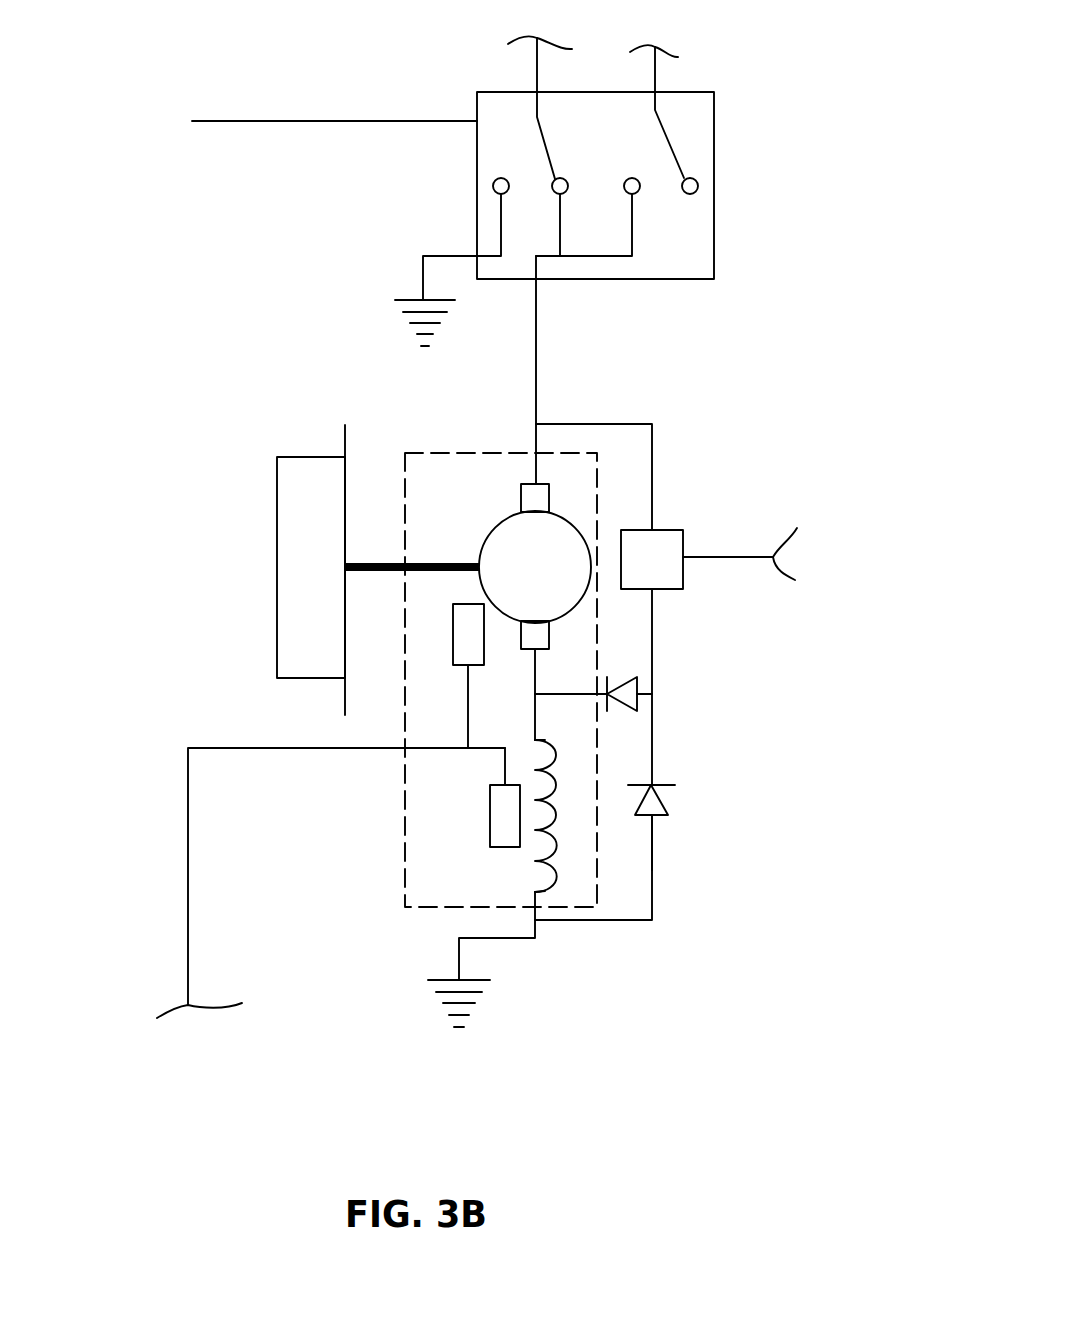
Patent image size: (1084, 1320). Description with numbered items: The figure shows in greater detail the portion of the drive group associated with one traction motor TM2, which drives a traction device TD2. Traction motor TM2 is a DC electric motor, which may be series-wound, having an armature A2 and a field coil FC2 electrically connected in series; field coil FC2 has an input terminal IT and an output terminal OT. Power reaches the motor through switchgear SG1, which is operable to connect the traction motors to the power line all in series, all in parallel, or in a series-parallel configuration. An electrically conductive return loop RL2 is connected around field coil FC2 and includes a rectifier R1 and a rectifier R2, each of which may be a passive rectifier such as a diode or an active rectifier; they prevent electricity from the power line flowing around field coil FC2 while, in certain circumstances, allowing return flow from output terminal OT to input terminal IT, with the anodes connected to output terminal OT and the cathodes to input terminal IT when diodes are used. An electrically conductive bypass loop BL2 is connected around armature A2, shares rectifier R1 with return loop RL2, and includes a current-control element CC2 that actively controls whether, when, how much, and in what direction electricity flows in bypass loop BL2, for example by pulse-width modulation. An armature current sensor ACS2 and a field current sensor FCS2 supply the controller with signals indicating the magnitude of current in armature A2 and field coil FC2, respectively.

The switchgear SG1 is at (477, 92).
The traction device TD2 is at (313, 455).
The traction motor TM2 is at (404, 873).
The armature A2 is at (559, 510).
The bypass loop BL2 is at (652, 477).
The current-control element CC2 is at (683, 557).
The rectifier R1 is at (637, 693).
The rectifier R2 is at (668, 782).
The return loop RL2 is at (652, 842).
The field coil FC2 is at (541, 823).
The input terminal IT is at (541, 740).
The output terminal OT is at (542, 890).
The armature current sensor ACS2 is at (453, 635).
The field current sensor FCS2 is at (489, 812).